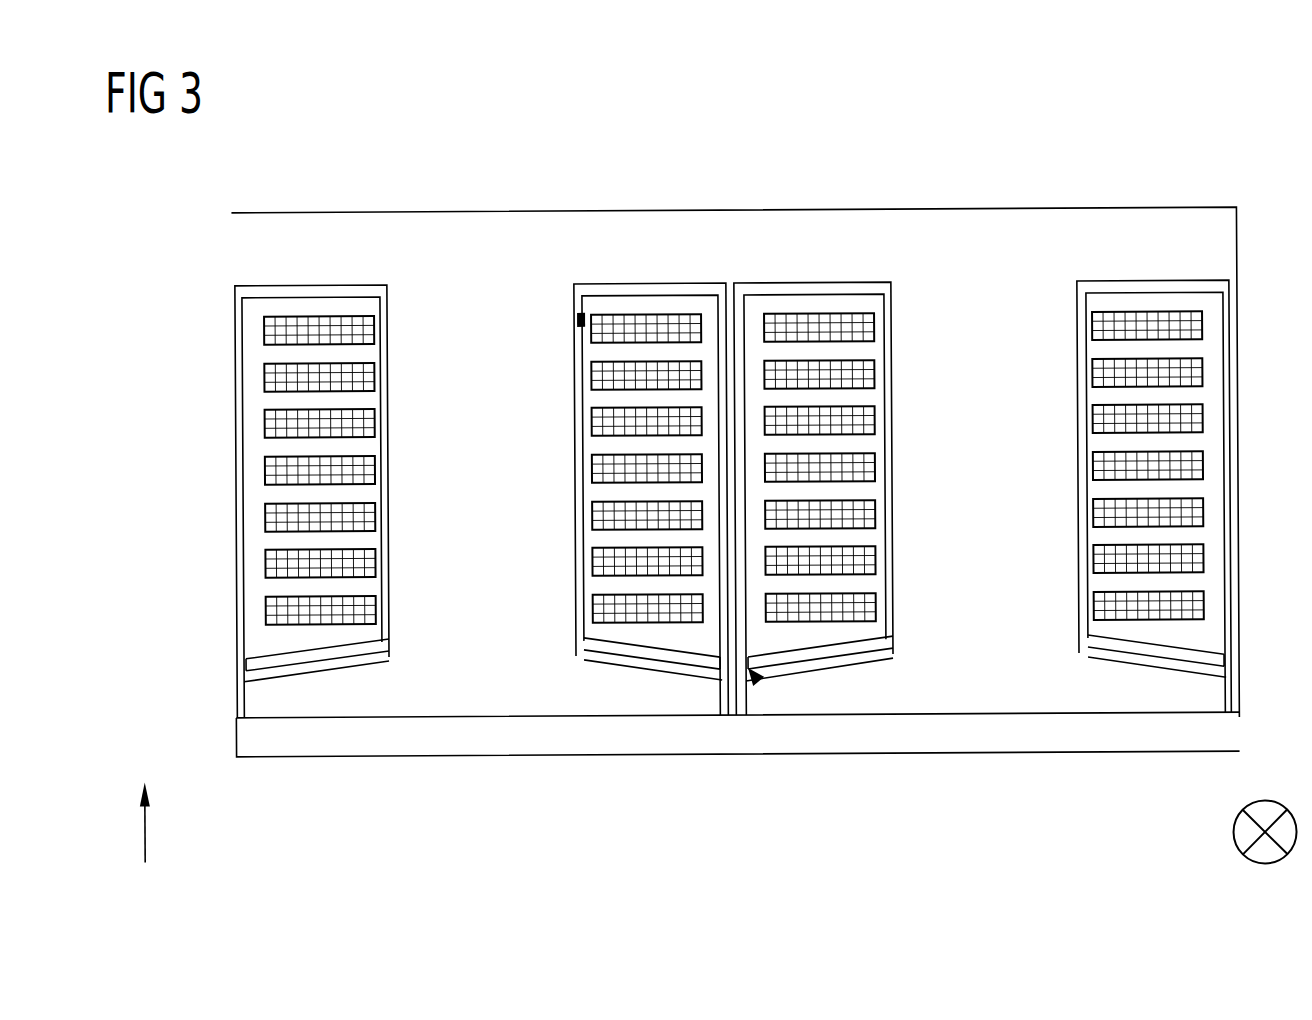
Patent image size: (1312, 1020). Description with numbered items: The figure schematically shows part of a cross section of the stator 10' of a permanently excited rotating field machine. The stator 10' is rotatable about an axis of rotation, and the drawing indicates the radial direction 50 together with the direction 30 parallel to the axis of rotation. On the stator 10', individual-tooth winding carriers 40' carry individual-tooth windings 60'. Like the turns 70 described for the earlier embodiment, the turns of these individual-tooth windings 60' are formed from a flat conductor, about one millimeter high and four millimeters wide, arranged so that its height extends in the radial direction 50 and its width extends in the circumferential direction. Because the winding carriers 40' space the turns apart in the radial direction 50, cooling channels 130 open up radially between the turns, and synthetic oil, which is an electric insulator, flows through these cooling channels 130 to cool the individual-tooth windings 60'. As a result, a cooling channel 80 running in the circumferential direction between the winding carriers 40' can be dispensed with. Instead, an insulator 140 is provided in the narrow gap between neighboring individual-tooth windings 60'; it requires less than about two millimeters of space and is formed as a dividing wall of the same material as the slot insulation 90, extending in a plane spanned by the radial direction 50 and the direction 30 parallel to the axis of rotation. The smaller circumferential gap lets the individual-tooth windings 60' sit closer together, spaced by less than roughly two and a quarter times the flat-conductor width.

The stator 10' is at (738, 779).
The direction parallel to the axis of rotation 30 is at (1232, 835).
The individual-tooth winding carrier 40' is at (735, 518).
The radial direction 50 is at (143, 835).
The individual-tooth winding 60' is at (818, 245).
The turns 70 is at (317, 300).
The cooling channel 80 is at (707, 305).
The slot insulation 90 is at (582, 302).
The cooling channels 130 is at (646, 600).
The insulator 140 is at (754, 680).